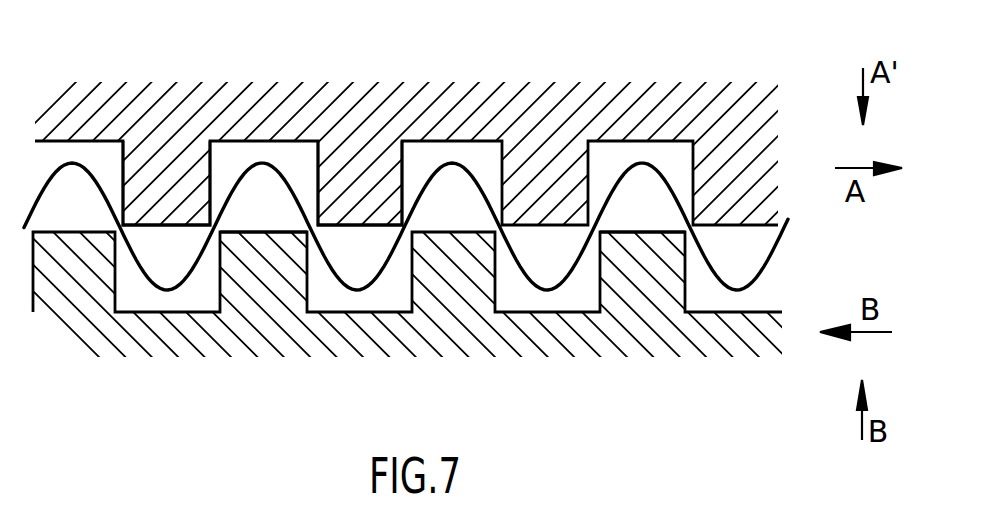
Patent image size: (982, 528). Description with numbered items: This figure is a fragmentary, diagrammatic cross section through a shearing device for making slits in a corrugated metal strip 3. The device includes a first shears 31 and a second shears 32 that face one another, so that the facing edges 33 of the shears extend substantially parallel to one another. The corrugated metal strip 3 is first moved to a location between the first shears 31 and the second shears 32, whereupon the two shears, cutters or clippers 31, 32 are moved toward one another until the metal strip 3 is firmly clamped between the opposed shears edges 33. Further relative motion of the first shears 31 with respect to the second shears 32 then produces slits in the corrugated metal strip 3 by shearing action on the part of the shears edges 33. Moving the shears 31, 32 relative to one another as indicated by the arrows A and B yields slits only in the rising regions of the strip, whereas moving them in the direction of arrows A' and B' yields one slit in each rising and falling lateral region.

The corrugated metal strip 3 is at (332, 280).
The first shears 31 is at (367, 140).
The second shears 32 is at (452, 328).
The shears edges 33 is at (208, 221).